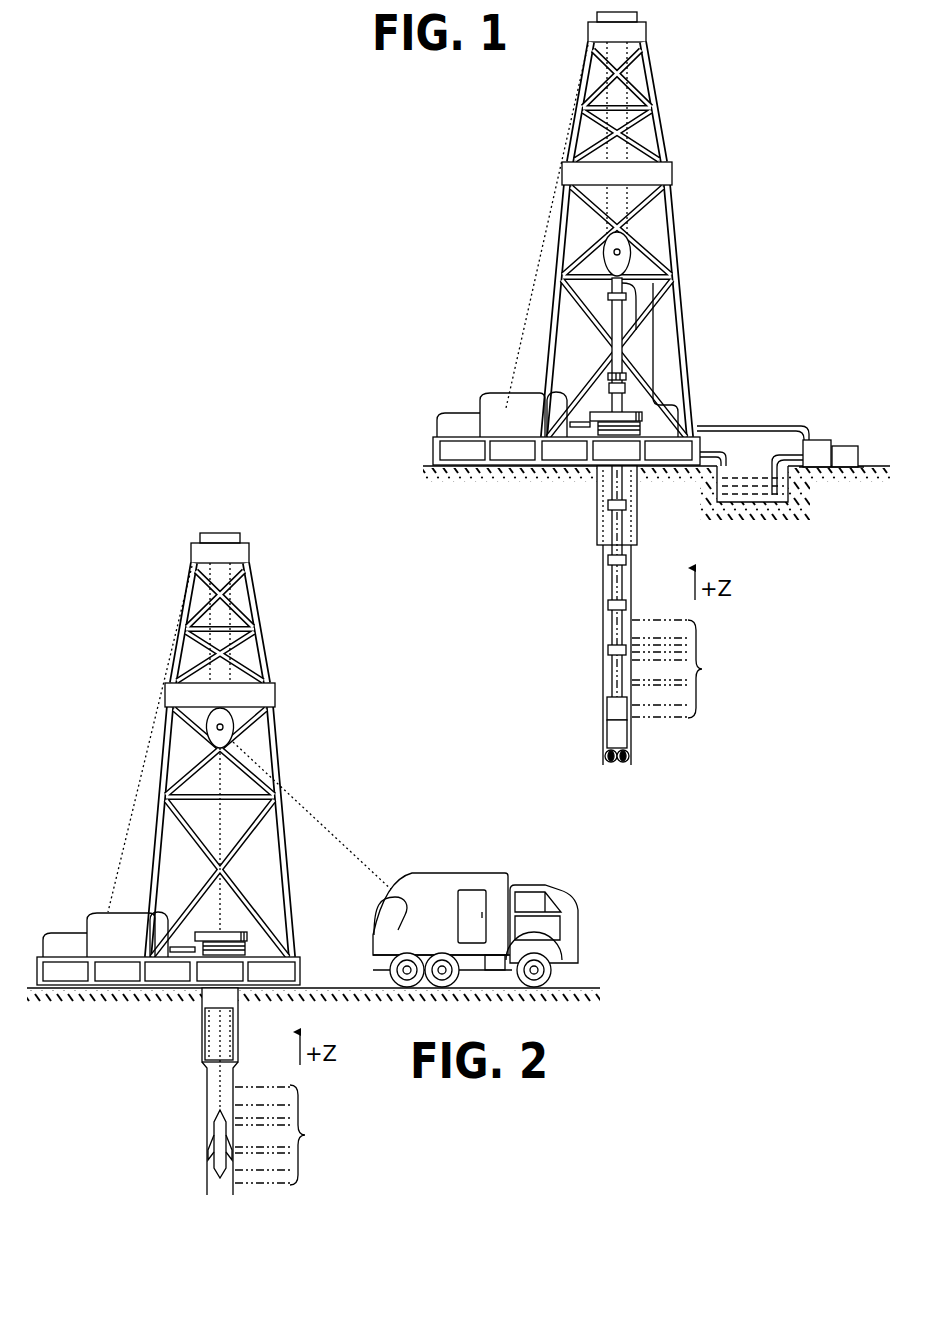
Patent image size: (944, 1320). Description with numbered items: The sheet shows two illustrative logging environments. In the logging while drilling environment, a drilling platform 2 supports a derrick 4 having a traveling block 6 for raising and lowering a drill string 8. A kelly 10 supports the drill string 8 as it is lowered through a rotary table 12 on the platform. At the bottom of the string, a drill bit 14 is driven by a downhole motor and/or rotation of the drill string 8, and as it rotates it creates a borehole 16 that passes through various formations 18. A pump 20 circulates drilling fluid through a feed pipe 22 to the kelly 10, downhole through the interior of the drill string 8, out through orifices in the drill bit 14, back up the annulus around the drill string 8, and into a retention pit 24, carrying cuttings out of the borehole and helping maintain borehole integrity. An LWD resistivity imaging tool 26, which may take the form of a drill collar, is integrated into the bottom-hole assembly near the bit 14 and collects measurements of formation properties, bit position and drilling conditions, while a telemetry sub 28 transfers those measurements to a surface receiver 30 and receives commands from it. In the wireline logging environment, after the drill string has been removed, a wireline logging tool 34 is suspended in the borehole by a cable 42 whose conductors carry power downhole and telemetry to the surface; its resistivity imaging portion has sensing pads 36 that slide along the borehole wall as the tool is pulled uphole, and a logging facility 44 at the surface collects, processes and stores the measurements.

In FIG. 1, the drilling platform 2 is at (433, 445).
In FIG. 2, the drilling platform 2 is at (302, 966).
In FIG. 1, the derrick 4 is at (656, 134).
In FIG. 2, the derrick 4 is at (290, 923).
In FIG. 1, the traveling block 6 is at (626, 250).
In FIG. 2, the traveling block 6 is at (229, 727).
In FIG. 1, the drill string 8 is at (620, 588).
In FIG. 1, the kelly 10 is at (617, 318).
In FIG. 1, the rotary table 12 is at (642, 416).
In FIG. 2, the rotary table 12 is at (243, 934).
In FIG. 1, the drill bit 14 is at (627, 756).
In FIG. 1, the borehole 16 is at (631, 598).
In FIG. 1, the formations 18 is at (682, 669).
In FIG. 2, the formations 18 is at (285, 1135).
In FIG. 1, the pump 20 is at (815, 441).
In FIG. 1, the feed pipe 22 is at (765, 428).
In FIG. 1, the retention pit 24 is at (735, 492).
In FIG. 1, the LWD resistivity imaging tool 26 is at (608, 730).
In FIG. 1, the telemetry sub 28 is at (612, 712).
In FIG. 1, the surface receiver 30 is at (628, 378).
In FIG. 2, the wireline logging tool 34 is at (218, 1132).
In FIG. 2, the sensing pads 36 is at (209, 1152).
In FIG. 2, the cable 42 is at (290, 795).
In FIG. 2, the logging facility 44 is at (440, 874).